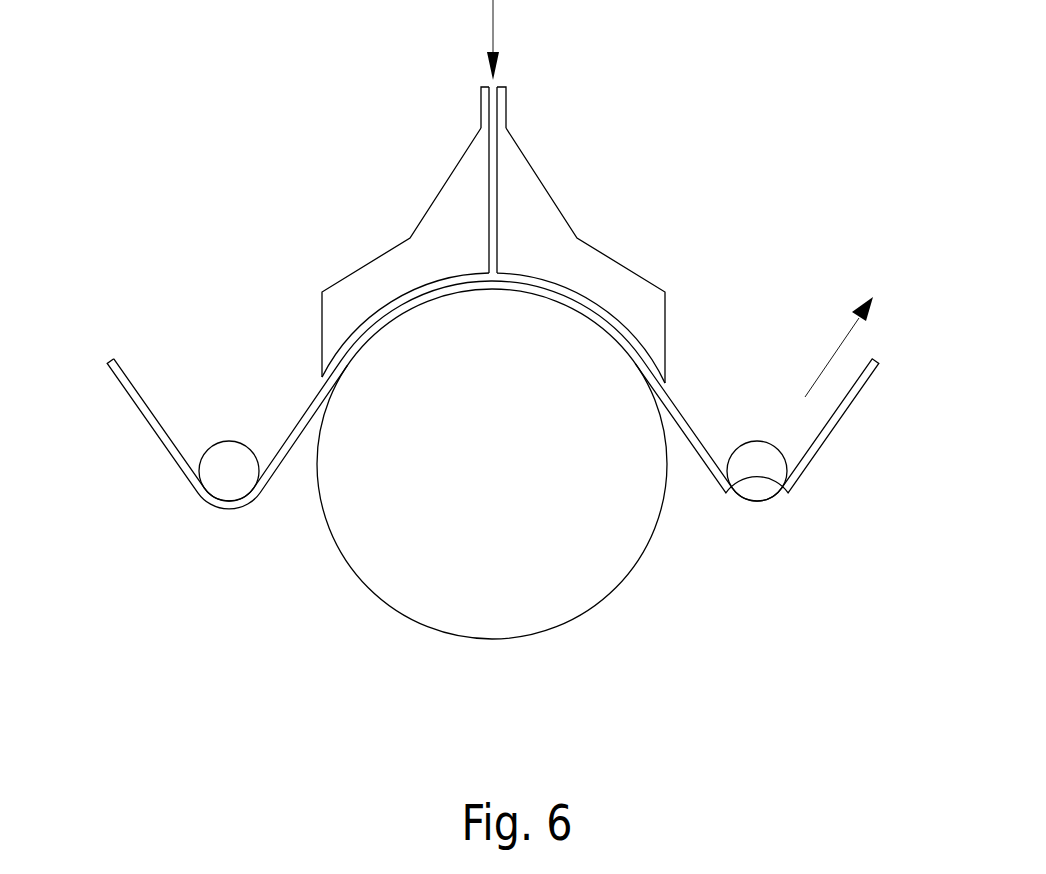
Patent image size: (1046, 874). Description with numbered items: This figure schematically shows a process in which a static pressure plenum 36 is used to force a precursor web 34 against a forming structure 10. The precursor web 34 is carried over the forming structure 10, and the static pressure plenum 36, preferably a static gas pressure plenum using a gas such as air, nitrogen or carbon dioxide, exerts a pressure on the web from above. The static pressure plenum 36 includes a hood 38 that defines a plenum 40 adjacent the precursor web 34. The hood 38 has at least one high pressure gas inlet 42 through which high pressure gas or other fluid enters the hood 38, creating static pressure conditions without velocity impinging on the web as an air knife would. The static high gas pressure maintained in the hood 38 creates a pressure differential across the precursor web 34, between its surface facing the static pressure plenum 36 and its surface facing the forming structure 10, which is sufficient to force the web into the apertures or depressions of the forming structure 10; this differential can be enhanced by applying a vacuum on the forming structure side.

The forming structure 10 is at (590, 615).
The precursor web 34 is at (155, 405).
The static pressure plenum 36 is at (484, 233).
The hood 38 is at (493, 255).
The plenum 40 is at (632, 337).
The high pressure gas inlet 42 is at (493, 180).